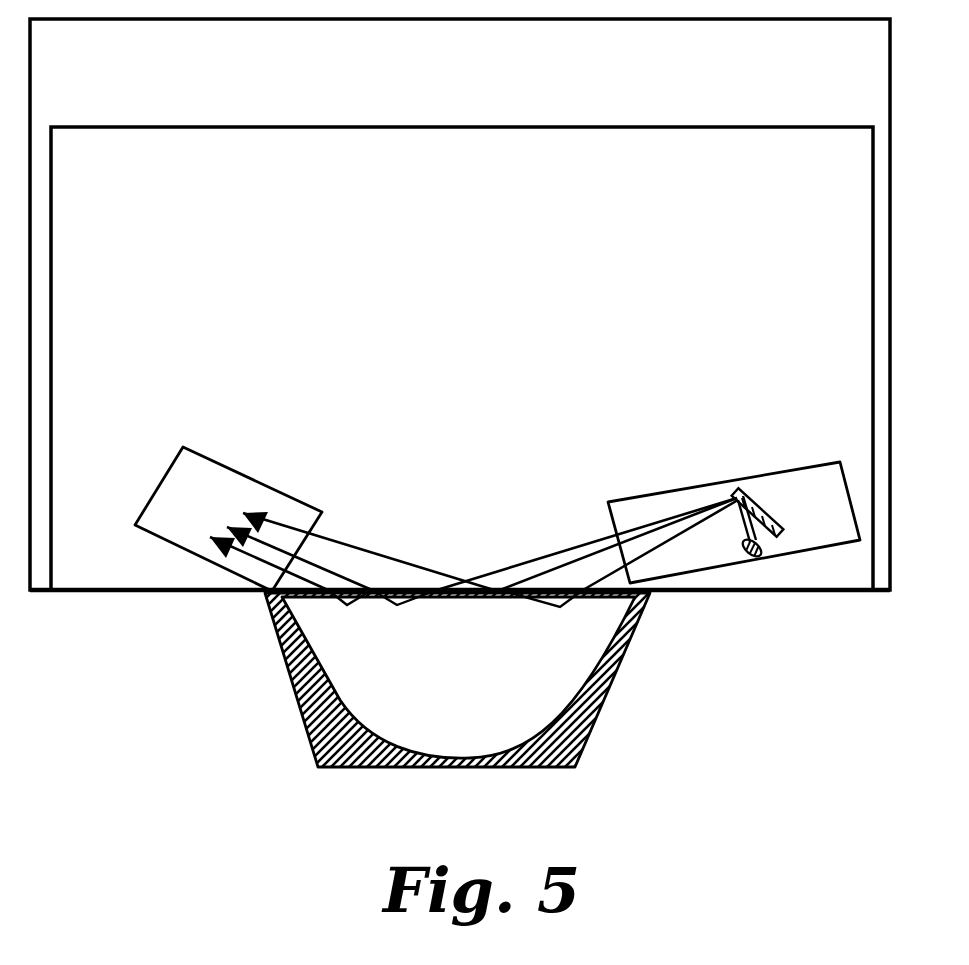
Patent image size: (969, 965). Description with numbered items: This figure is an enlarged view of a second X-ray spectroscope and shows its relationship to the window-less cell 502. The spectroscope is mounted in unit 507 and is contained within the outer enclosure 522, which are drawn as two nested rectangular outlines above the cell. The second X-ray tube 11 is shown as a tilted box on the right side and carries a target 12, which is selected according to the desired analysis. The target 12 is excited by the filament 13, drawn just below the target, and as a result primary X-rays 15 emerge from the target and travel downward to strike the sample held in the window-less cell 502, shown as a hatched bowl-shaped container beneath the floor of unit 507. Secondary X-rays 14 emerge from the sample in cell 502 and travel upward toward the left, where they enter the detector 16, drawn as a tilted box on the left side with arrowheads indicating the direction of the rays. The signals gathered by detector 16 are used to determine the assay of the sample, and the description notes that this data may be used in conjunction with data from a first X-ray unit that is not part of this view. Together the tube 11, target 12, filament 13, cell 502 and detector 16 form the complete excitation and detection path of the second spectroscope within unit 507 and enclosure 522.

The enclosure 522 is at (448, 85).
The unit 507 is at (433, 232).
The detector 16 is at (222, 487).
The secondary X-rays 14 is at (338, 533).
The primary X-rays 15 is at (567, 552).
The second X-ray tube 11 is at (827, 478).
The target 12 is at (760, 497).
The filament 13 is at (758, 557).
The window-less cell 502 is at (570, 742).